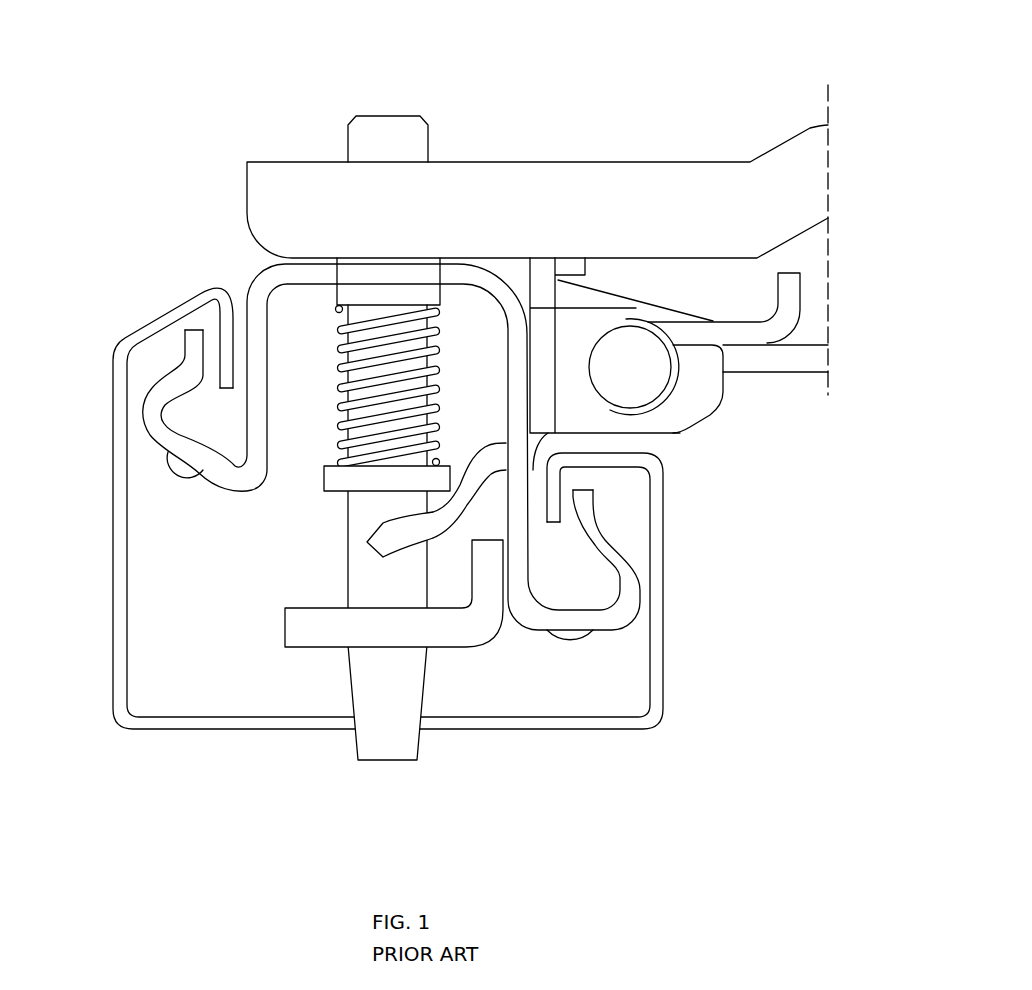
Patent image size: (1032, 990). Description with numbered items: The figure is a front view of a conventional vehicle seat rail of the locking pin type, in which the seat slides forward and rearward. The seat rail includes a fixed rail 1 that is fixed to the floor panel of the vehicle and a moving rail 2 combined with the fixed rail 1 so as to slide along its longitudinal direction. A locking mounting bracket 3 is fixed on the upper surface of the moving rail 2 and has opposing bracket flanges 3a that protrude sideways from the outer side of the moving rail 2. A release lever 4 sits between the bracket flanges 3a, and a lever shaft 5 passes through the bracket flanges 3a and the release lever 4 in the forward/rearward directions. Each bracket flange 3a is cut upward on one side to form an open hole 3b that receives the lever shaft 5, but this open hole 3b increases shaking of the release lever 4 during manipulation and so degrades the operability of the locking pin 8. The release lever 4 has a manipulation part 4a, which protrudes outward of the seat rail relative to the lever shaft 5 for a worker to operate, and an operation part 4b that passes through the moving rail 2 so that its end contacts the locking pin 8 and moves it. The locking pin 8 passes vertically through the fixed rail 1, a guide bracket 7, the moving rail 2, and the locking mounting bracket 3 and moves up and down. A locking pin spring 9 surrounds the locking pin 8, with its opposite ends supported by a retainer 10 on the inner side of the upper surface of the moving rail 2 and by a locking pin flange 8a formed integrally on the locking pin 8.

The fixed rail 1 is at (193, 725).
The moving rail 2 is at (263, 290).
The locking mounting bracket 3 is at (568, 195).
The bracket flange 3a is at (705, 397).
The open hole 3b is at (681, 352).
The release lever 4 is at (500, 495).
The manipulation part 4a is at (808, 360).
The operation part 4b is at (367, 542).
The lever shaft 5 is at (630, 363).
The guide bracket 7 is at (460, 630).
The locking pin 8 is at (388, 133).
The locking pin flange 8a is at (328, 481).
The locking pin spring 9 is at (338, 407).
The retainer 10 is at (433, 295).